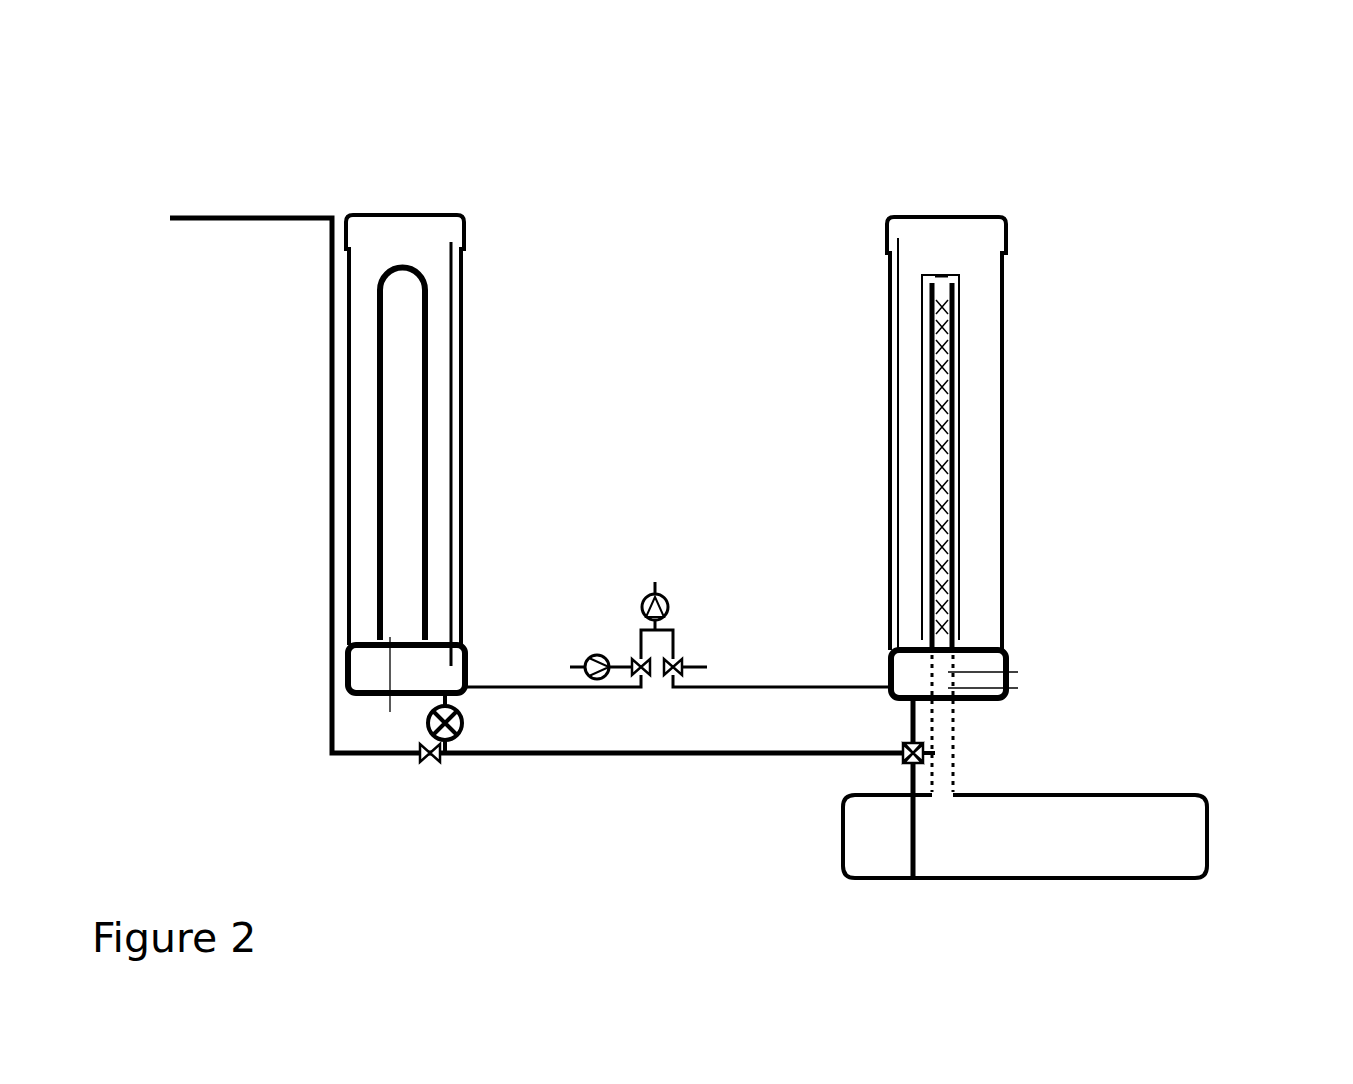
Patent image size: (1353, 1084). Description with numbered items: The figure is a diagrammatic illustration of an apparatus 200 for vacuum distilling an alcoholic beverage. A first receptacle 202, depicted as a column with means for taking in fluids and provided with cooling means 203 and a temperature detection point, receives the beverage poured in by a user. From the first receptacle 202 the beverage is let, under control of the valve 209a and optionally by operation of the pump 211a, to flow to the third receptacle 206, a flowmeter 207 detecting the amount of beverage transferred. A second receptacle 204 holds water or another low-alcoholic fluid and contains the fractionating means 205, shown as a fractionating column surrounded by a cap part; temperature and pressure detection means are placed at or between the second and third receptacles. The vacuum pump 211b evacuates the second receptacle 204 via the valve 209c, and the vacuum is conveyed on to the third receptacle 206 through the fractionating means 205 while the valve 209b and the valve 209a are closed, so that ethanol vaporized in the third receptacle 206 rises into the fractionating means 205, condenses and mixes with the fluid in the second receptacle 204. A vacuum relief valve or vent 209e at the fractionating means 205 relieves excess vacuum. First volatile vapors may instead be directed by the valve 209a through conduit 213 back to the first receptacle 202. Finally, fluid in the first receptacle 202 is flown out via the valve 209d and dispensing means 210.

The apparatus 200 is at (156, 68).
The first receptacle 202 is at (382, 215).
The cooling means 203 is at (428, 348).
The second receptacle 204 is at (915, 216).
The fractionating means 205 is at (962, 342).
The third receptacle 206 is at (1180, 792).
The flowmeter 207 is at (430, 732).
The valve 209a is at (900, 758).
The valve 209b is at (637, 658).
The valve 209c is at (682, 658).
The valve 209d is at (437, 762).
The vacuum relief valve or vent 209e is at (942, 276).
The dispensing means 210 is at (270, 216).
The pump 211a is at (590, 656).
The vacuum pump 211b is at (658, 596).
The conduit 213 is at (925, 757).